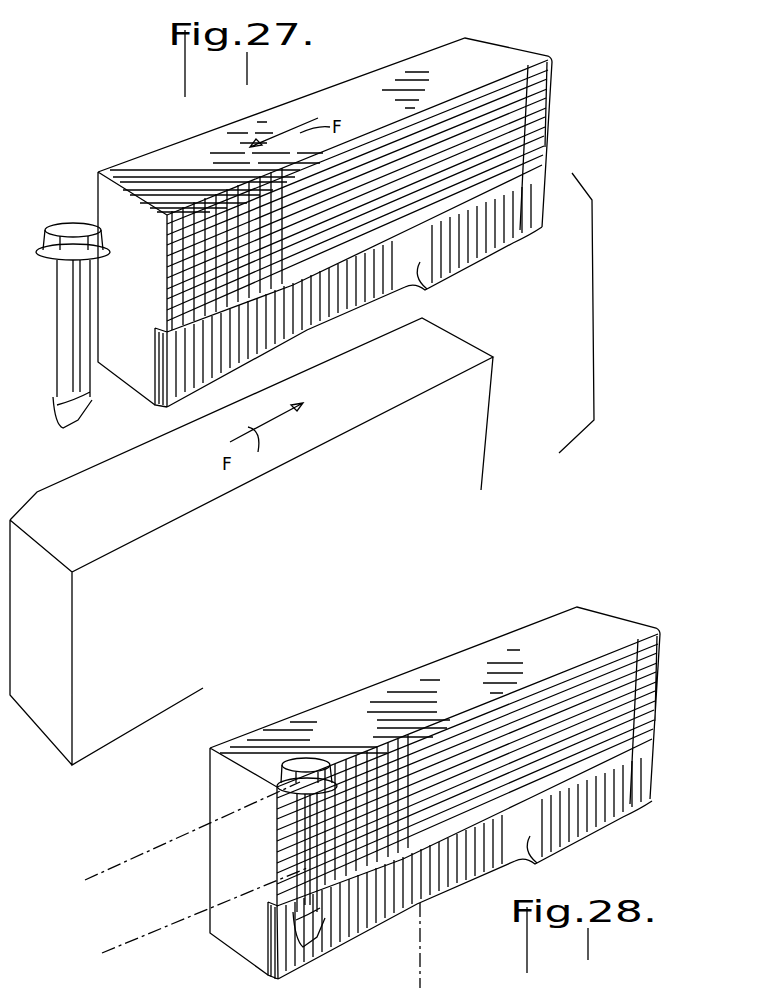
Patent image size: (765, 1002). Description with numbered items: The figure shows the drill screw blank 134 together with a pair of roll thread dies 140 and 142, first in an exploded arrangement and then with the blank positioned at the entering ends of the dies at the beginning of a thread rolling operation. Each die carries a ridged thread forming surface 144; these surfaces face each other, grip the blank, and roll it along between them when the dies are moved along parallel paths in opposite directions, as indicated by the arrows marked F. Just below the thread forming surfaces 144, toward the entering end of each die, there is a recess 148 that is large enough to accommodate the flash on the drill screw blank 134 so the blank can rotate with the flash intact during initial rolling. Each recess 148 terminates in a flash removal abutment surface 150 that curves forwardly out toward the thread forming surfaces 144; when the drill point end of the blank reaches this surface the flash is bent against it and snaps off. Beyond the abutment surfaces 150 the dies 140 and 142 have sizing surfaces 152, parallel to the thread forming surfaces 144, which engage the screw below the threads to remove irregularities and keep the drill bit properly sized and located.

In FIG. 27, the drill screw blank 134 is at (58, 223).
In FIG. 28, the drill screw blank 134 is at (318, 763).
In FIG. 27, the roll thread die 140 is at (385, 70).
In FIG. 28, the roll thread die 140 is at (440, 664).
In FIG. 27, the roll thread die 142 is at (459, 350).
In FIG. 27, the thread forming surfaces 144 is at (492, 113).
In FIG. 28, the thread forming surfaces 144 is at (575, 687).
In FIG. 27, the recess 148 is at (167, 402).
In FIG. 28, the recess 148 is at (268, 948).
In FIG. 27, the flash removal abutment surface 150 is at (412, 262).
In FIG. 28, the flash removal abutment surface 150 is at (527, 862).
In FIG. 27, the sizing surfaces 152 is at (500, 242).
In FIG. 28, the sizing surfaces 152 is at (594, 810).